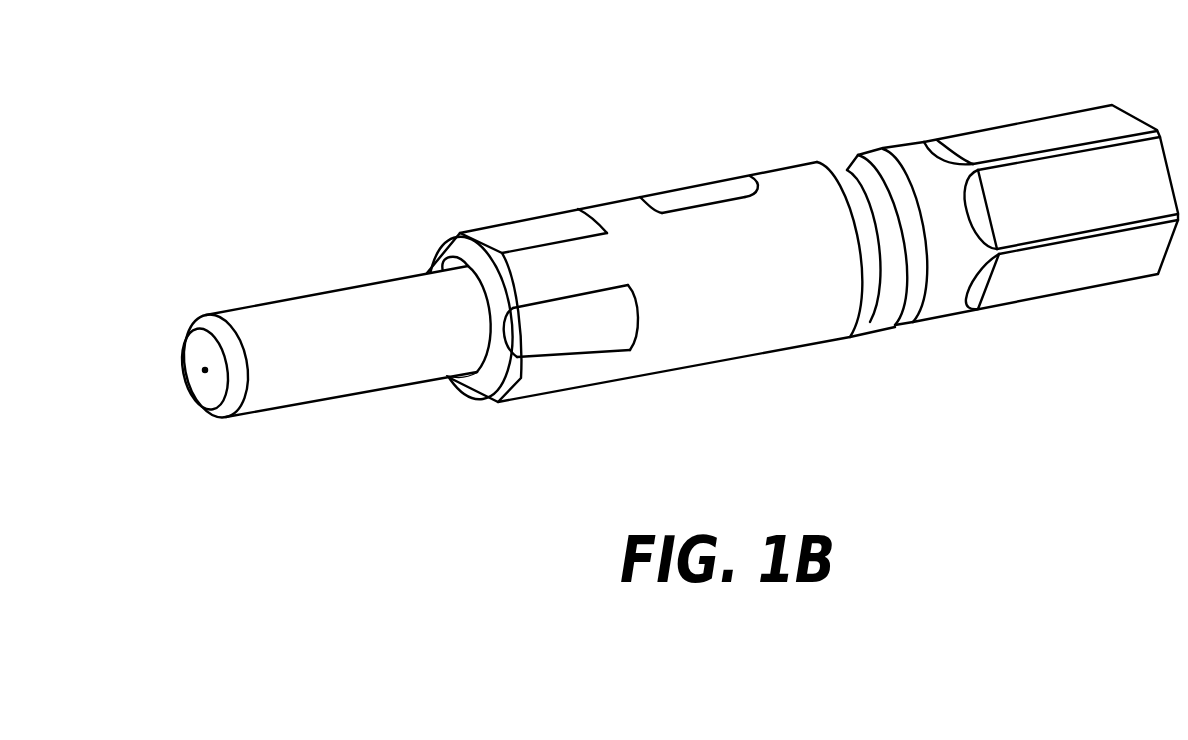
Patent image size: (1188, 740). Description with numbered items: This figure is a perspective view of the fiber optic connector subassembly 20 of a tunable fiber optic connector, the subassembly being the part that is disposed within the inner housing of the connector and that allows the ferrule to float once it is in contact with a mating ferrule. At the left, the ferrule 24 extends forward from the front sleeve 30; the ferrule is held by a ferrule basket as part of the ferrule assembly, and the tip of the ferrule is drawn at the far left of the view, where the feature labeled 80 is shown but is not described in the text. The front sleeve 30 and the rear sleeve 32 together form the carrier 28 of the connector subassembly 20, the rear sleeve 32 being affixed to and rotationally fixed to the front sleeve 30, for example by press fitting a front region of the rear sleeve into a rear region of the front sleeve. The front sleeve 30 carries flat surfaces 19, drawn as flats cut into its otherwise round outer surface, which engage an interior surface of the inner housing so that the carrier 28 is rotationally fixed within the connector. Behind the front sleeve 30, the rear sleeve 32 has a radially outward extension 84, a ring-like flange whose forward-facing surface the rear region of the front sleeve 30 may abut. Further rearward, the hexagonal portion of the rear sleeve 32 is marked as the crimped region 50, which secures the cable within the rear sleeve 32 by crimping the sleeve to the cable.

The flat surfaces 19 is at (505, 237).
The fiber optic connector subassembly 20 is at (655, 135).
The ferrule 24 is at (275, 325).
The carrier 28 is at (824, 132).
The front sleeve 30 is at (735, 340).
The rear sleeve 32 is at (1007, 287).
The crimped region 50 is at (1105, 92).
The pin tip center 80 is at (210, 392).
The radially outward extension 84 is at (872, 303).